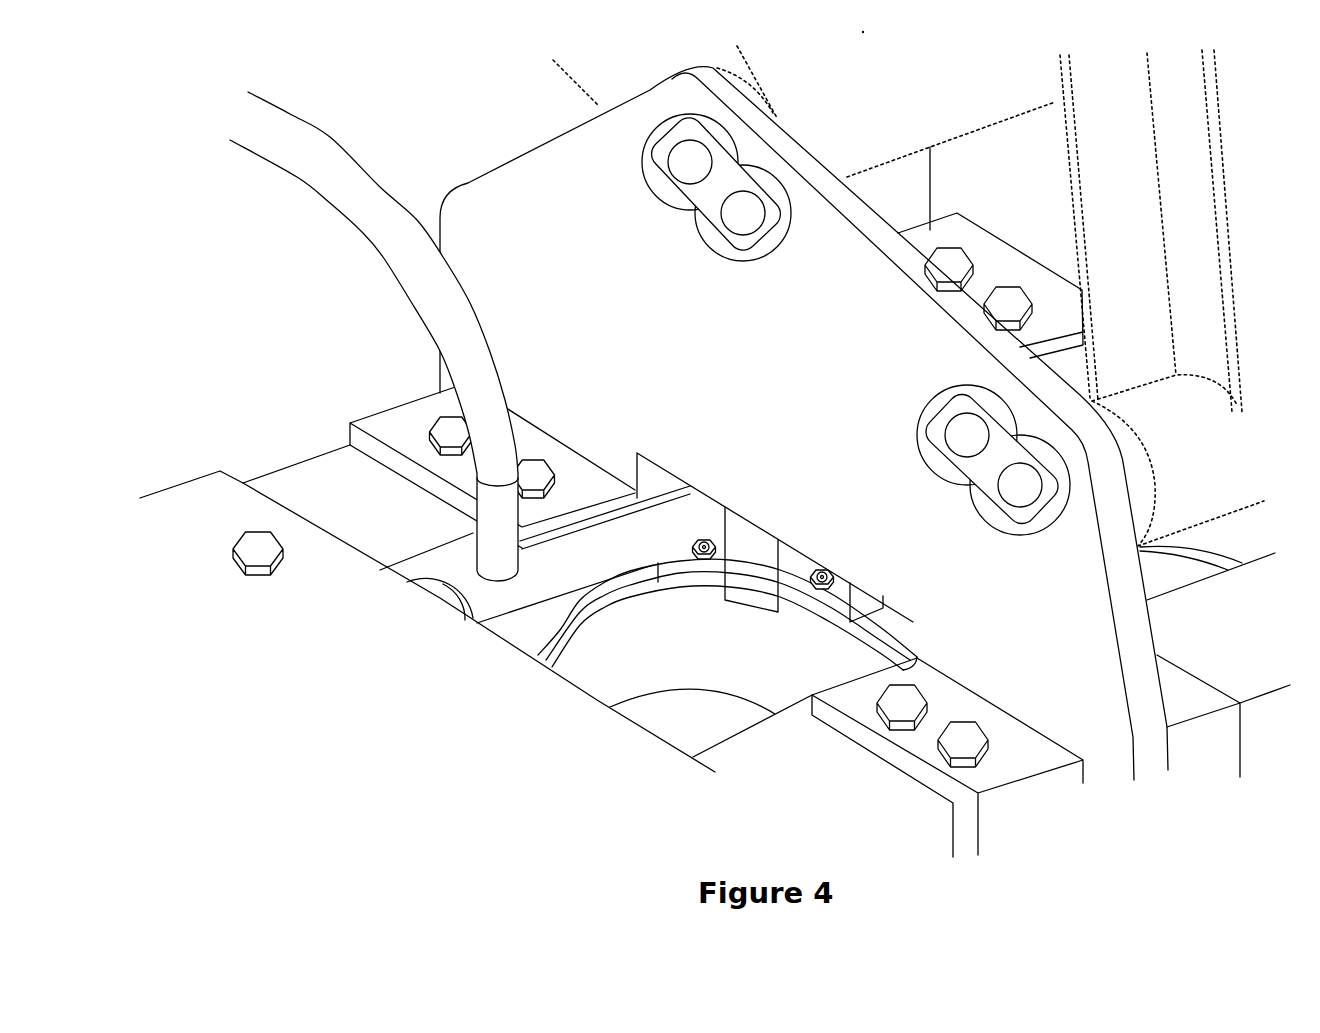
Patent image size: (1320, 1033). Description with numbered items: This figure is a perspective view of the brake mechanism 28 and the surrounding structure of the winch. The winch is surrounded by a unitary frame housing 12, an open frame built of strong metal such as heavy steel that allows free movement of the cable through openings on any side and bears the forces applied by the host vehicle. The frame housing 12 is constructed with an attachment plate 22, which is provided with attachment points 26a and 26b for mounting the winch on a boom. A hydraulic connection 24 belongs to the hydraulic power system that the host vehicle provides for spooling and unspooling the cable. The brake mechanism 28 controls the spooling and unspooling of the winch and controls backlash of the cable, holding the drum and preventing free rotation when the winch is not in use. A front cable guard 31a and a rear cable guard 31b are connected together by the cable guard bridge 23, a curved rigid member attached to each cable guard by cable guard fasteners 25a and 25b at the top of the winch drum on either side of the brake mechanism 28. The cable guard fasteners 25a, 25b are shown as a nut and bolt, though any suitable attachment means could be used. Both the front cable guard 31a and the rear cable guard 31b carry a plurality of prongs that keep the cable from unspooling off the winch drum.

The frame housing 12 is at (317, 455).
The attachment plate 22 is at (523, 155).
The cable guard bridge 23 is at (745, 570).
The hydraulic connection 24 is at (328, 203).
The cable guard fastener 25a is at (823, 567).
The cable guard fastener 25b is at (707, 537).
The attachment point 26a is at (657, 193).
The attachment point 26b is at (1047, 540).
The brake mechanism 28 is at (747, 537).
The front cable guard 31a is at (870, 645).
The rear cable guard 31b is at (540, 650).